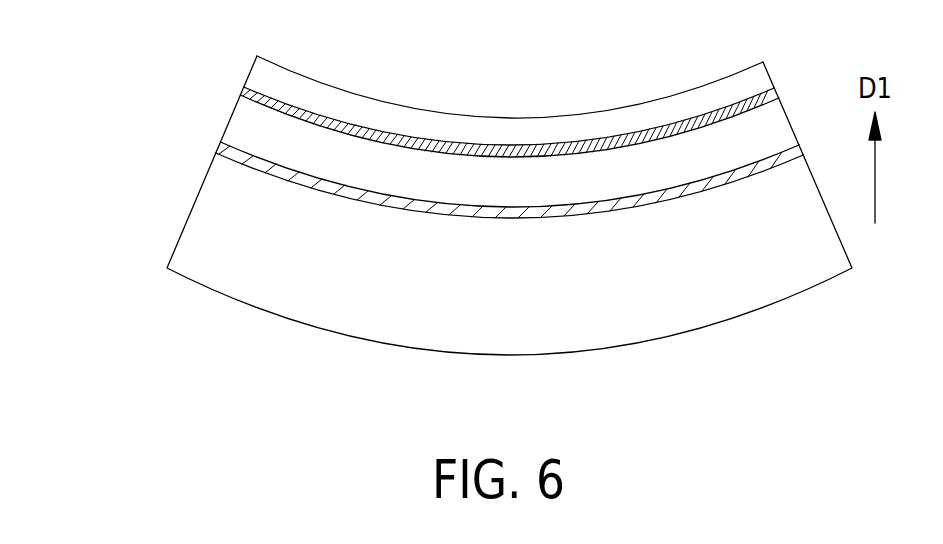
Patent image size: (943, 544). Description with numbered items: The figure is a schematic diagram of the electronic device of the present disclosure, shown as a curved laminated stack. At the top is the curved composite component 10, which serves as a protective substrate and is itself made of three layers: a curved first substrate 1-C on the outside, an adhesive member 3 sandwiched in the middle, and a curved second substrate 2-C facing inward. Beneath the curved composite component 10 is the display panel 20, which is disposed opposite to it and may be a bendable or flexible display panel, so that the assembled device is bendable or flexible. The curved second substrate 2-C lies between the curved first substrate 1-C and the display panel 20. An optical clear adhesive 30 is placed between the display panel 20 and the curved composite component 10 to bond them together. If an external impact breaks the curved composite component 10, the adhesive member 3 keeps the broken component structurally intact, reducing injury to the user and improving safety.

The curved composite component 10 is at (112, 47).
The curved first substrate 1-C is at (250, 72).
The adhesive member 3 is at (243, 90).
The curved second substrate 2-C is at (228, 128).
The optical clear adhesive 30 is at (245, 158).
The display panel 20 is at (193, 212).